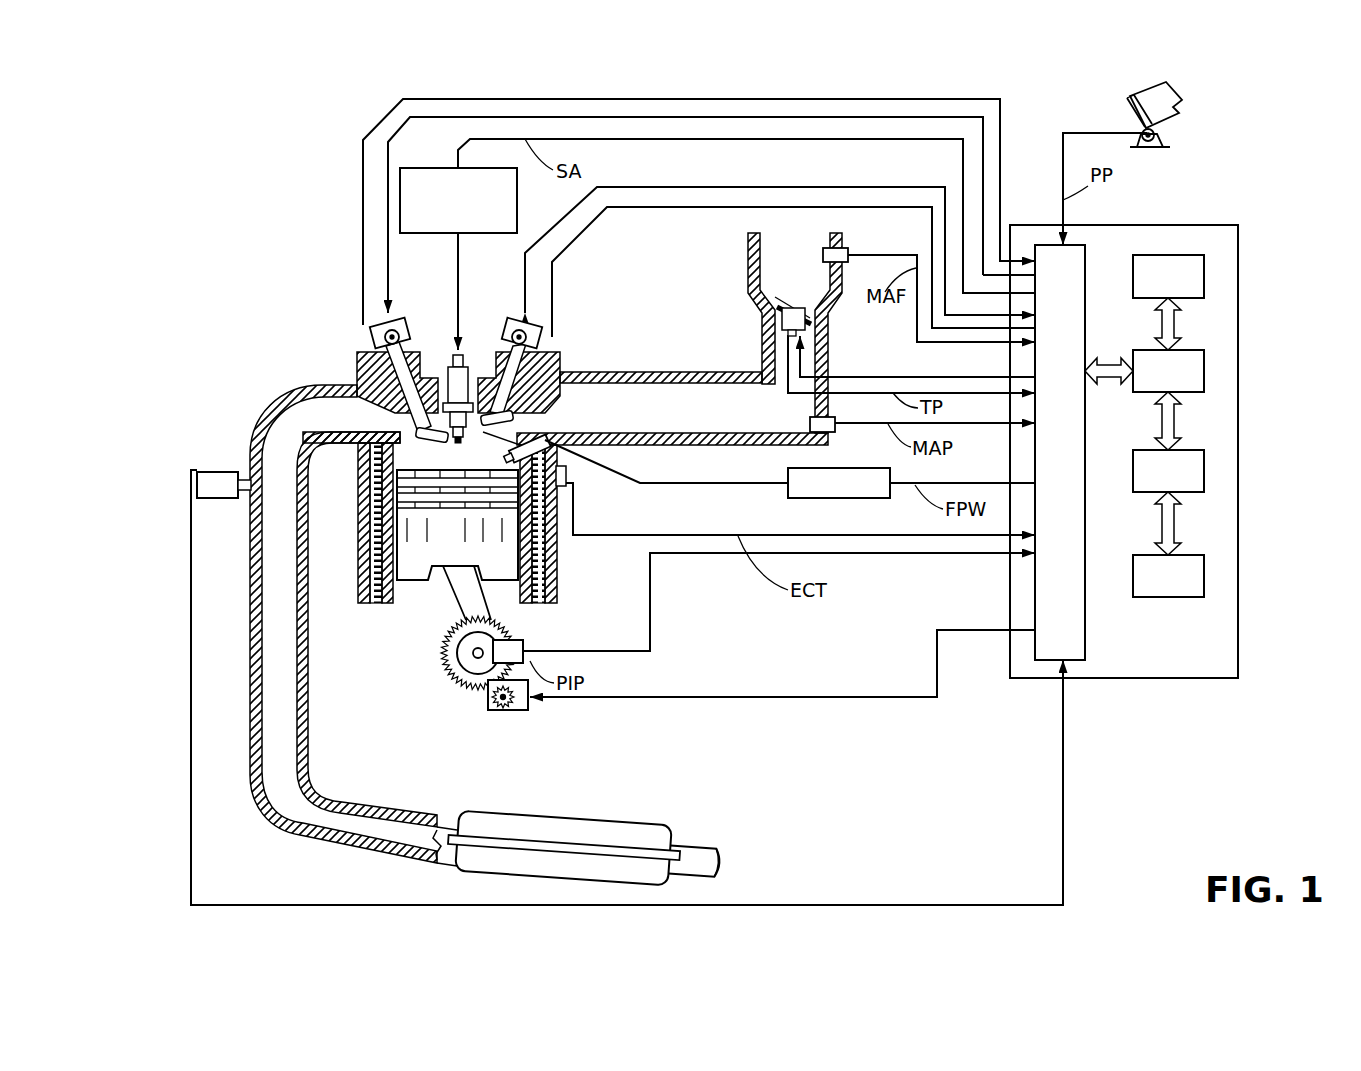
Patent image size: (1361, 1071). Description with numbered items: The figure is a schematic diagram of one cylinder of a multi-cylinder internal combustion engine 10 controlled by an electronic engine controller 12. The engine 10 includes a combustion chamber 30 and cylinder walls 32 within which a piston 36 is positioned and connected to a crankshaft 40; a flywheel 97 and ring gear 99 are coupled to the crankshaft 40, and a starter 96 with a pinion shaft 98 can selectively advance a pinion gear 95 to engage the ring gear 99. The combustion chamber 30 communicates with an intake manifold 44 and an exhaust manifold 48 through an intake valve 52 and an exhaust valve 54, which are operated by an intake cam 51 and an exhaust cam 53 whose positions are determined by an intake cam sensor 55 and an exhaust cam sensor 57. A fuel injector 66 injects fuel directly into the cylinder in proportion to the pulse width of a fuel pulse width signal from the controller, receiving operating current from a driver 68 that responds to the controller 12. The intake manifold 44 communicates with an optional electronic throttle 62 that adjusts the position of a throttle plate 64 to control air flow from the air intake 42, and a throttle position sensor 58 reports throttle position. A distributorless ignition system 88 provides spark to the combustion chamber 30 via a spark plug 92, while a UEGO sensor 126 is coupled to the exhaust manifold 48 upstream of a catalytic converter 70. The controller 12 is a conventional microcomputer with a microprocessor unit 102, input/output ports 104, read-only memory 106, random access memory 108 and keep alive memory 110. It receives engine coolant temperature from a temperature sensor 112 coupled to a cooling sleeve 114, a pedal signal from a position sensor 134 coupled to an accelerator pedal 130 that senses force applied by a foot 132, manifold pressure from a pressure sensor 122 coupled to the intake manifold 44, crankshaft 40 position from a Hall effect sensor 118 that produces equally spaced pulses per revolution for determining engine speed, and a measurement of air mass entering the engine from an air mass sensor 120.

The internal combustion engine 10 is at (292, 306).
The electronic engine controller 12 is at (1232, 226).
The combustion chamber 30 is at (378, 556).
The cylinder walls 32 is at (402, 592).
The piston 36 is at (438, 555).
The crankshaft 40 is at (466, 672).
The air intake 42 is at (802, 280).
The intake manifold 44 is at (739, 419).
The exhaust manifold 48 is at (333, 424).
The intake cam 51 is at (510, 320).
The intake valve 52 is at (520, 420).
The exhaust cam 53 is at (400, 318).
The exhaust valve 54 is at (360, 392).
The intake cam sensor 55 is at (538, 340).
The exhaust cam sensor 57 is at (372, 342).
The throttle position sensor 58 is at (780, 340).
The electronic throttle 62 is at (812, 316).
The throttle plate 64 is at (776, 312).
The fuel injector 66 is at (548, 452).
The driver 68 is at (812, 498).
The catalytic converter 70 is at (475, 815).
The distributorless ignition system 88 is at (415, 168).
The spark plug 92 is at (462, 350).
The pinion gear 95 is at (507, 712).
The starter 96 is at (528, 706).
The flywheel 97 is at (452, 650).
The pinion shaft 98 is at (497, 708).
The ring gear 99 is at (472, 688).
The microprocessor unit 102 is at (1205, 368).
The input/output ports 104 is at (1087, 256).
The read-only memory 106 is at (1205, 274).
The random access memory 108 is at (1205, 470).
The keep alive memory 110 is at (1205, 573).
The temperature sensor 112 is at (562, 476).
The cooling sleeve 114 is at (550, 553).
The Hall effect sensor 118 is at (522, 642).
The air mass sensor 120 is at (838, 249).
The pressure sensor 122 is at (830, 433).
The Universal Exhaust Gas Oxygen sensor 126 is at (197, 477).
The accelerator pedal 130 is at (1130, 110).
The foot 132 is at (1178, 92).
The position sensor 134 is at (1165, 132).